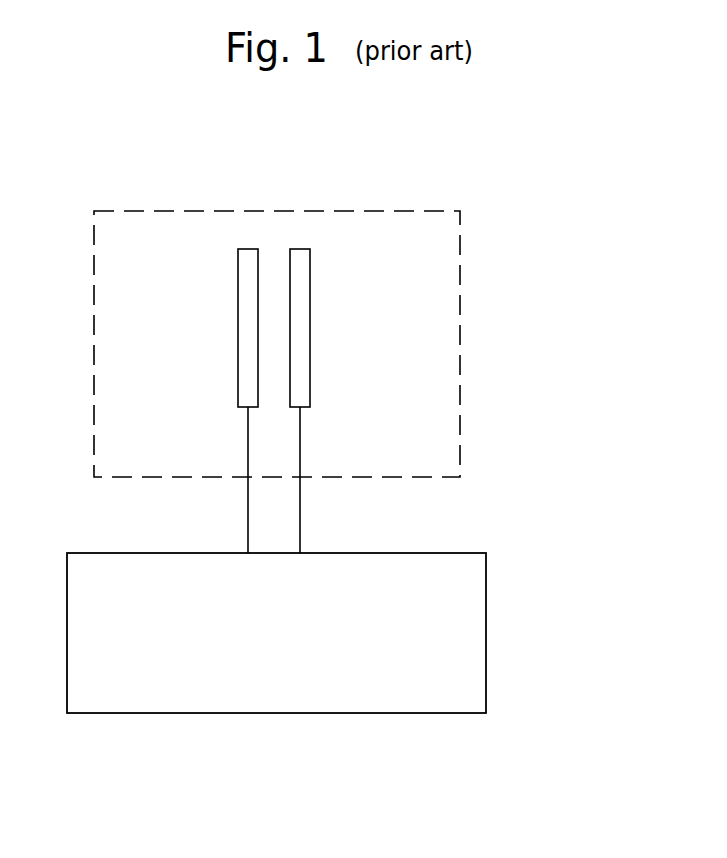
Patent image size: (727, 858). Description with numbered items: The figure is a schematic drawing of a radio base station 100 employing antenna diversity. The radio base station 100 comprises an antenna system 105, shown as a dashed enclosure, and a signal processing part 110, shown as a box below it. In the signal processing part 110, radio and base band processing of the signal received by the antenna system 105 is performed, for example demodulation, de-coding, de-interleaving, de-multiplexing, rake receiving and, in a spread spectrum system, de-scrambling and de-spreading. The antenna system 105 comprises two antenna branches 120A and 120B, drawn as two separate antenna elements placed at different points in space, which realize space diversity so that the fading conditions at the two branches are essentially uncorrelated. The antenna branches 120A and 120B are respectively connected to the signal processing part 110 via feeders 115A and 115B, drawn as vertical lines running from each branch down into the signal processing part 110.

The radio base station 100 is at (298, 816).
The antenna system 105 is at (460, 271).
The signal processing part 110 is at (486, 630).
The feeder 115A is at (300, 517).
The feeder 115B is at (248, 517).
The antenna branch 120A is at (238, 344).
The antenna branch 120B is at (310, 345).